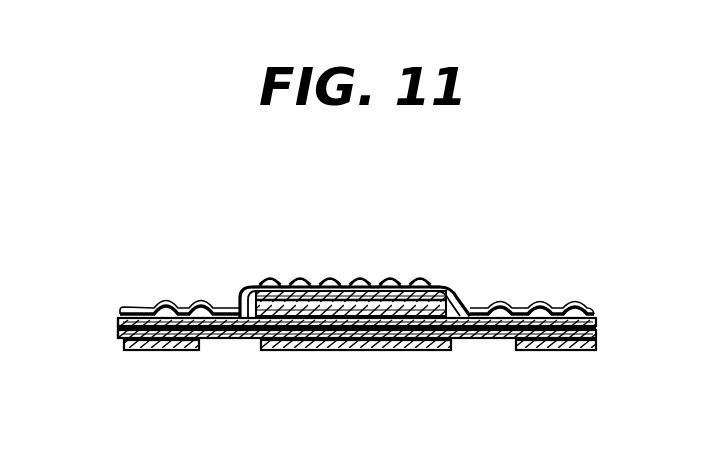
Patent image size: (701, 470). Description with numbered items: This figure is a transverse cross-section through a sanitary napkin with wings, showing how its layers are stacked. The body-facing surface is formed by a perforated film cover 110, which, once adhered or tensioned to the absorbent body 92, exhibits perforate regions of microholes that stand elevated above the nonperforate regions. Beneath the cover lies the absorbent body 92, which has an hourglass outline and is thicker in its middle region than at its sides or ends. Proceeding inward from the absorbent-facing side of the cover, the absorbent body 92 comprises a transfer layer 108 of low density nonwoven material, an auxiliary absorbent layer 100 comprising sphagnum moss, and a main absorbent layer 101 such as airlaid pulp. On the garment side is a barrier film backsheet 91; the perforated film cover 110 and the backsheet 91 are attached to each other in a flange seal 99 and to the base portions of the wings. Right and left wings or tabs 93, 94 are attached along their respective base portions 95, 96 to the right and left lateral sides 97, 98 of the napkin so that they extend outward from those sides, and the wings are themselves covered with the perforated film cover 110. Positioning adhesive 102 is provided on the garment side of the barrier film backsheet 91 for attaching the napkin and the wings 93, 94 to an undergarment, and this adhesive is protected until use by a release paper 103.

The barrier film backsheet 91 is at (484, 331).
The absorbent body 92 is at (260, 332).
The right wing or tab 93 is at (535, 303).
The left wing or tab 94 is at (142, 306).
The base portion of right wing 95 is at (452, 331).
The base portion of left wing 96 is at (210, 332).
The right lateral side 97 is at (438, 331).
The left lateral side 98 is at (230, 331).
The flange seal 99 is at (226, 302).
The auxiliary absorbent layer 100 is at (410, 292).
The main absorbent layer 101 is at (297, 340).
The positioning adhesive 102 is at (114, 342).
The release paper 103 is at (130, 343).
The transfer layer 108 is at (425, 282).
The perforated film cover 110 is at (450, 279).